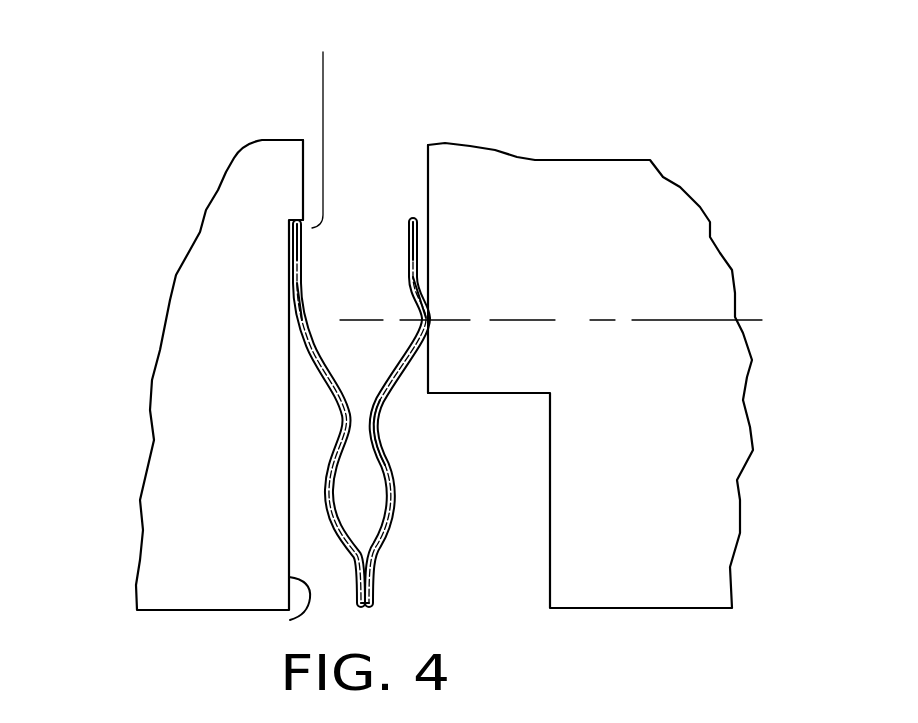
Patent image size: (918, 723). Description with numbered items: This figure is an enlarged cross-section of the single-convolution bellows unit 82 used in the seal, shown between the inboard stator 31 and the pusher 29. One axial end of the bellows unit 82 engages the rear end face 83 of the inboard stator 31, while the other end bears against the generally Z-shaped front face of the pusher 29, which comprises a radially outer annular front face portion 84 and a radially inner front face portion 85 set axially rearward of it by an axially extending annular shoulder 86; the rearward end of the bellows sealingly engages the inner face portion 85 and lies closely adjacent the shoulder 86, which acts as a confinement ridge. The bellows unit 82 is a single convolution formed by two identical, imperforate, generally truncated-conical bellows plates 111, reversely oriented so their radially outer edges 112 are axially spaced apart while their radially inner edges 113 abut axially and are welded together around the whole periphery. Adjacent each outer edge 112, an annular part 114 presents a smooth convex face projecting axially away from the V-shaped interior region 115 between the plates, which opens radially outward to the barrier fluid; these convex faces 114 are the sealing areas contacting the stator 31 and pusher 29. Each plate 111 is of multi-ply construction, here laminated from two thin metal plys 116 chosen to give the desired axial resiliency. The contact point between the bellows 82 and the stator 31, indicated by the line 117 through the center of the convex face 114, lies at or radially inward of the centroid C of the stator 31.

The pusher 29 is at (152, 518).
The inboard stator 31 is at (712, 432).
The bellows unit 82 is at (470, 350).
The rear end face 83 is at (428, 172).
The radially outer annular front face portion 84 is at (323, 138).
The radially inner front face portion 85 is at (290, 618).
The annular shoulder 86 is at (326, 117).
The bellows plates 111 is at (312, 504).
The radially outer edges 112 is at (289, 217).
The radially inner edges 113 is at (378, 610).
The annular part 114 is at (288, 332).
The V-shaped interior region 115 is at (355, 248).
The plys 116 is at (392, 460).
The line 117 is at (462, 318).
The centroid C is at (662, 292).